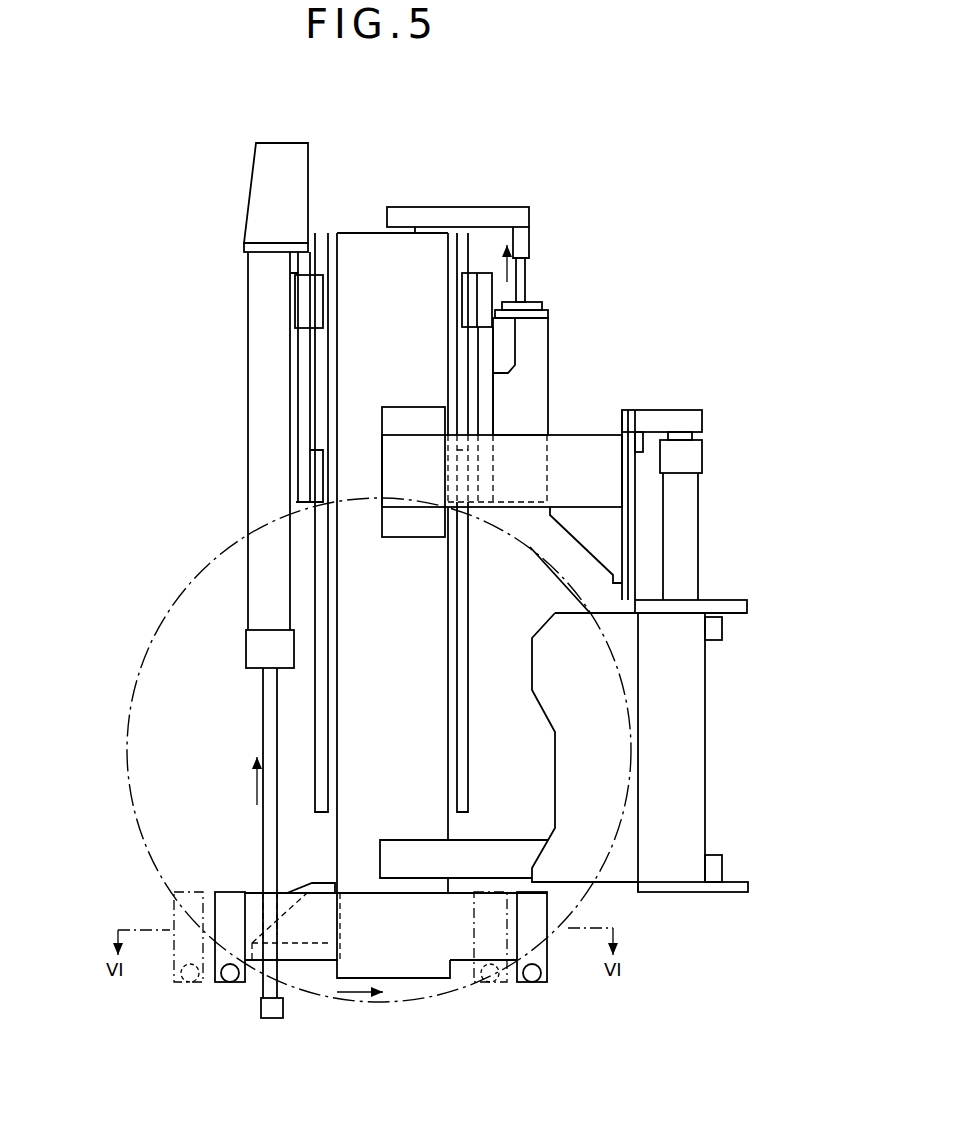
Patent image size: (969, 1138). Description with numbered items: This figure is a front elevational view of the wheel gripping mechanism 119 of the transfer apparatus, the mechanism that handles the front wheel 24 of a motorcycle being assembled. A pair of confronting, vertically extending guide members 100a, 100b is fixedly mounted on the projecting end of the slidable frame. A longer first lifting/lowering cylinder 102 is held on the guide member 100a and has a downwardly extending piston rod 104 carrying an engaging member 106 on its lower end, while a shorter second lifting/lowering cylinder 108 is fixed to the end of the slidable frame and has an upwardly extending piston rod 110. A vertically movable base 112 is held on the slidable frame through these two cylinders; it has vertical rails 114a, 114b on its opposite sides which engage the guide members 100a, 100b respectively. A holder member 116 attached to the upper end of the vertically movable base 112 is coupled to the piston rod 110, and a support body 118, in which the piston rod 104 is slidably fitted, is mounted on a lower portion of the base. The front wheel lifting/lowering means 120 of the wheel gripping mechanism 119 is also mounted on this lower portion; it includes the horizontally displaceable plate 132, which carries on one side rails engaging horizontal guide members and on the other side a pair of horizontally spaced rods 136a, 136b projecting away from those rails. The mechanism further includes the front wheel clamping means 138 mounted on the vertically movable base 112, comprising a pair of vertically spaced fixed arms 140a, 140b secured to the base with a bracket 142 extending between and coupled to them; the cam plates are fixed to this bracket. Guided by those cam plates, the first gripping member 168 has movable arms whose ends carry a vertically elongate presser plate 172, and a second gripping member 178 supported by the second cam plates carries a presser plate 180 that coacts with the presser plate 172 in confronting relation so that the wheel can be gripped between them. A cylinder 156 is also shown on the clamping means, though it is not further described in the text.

The front wheel 24 is at (143, 828).
The guide member 100a is at (315, 290).
The guide member 100b is at (468, 290).
The first lifting/lowering cylinder 102 is at (260, 368).
The piston rod 104 is at (270, 687).
The engaging member 106 is at (272, 1018).
The second lifting/lowering cylinder 108 is at (540, 373).
The piston rod 110 is at (522, 288).
The vertically movable base 112 is at (370, 242).
The vertical rail 114a is at (324, 340).
The vertical rail 114b is at (467, 632).
The holder member 116 is at (478, 212).
The support body 118 is at (326, 945).
The wheel gripping mechanism 119 is at (733, 294).
The front wheel lifting/lowering means 120 is at (246, 1034).
The horizontally displaceable plate 132 is at (405, 950).
The rod 136a is at (490, 980).
The rod 136b is at (230, 978).
The front wheel clamping means 138 is at (710, 582).
The fixed arm 140a is at (590, 437).
The fixed arm 140b is at (395, 843).
The bracket 142 is at (628, 592).
The cylinder 156 is at (695, 512).
The first gripping member 168 is at (675, 752).
The presser plate 172 is at (675, 752).
The second gripping member 178 is at (675, 752).
The presser plate 180 is at (630, 718).